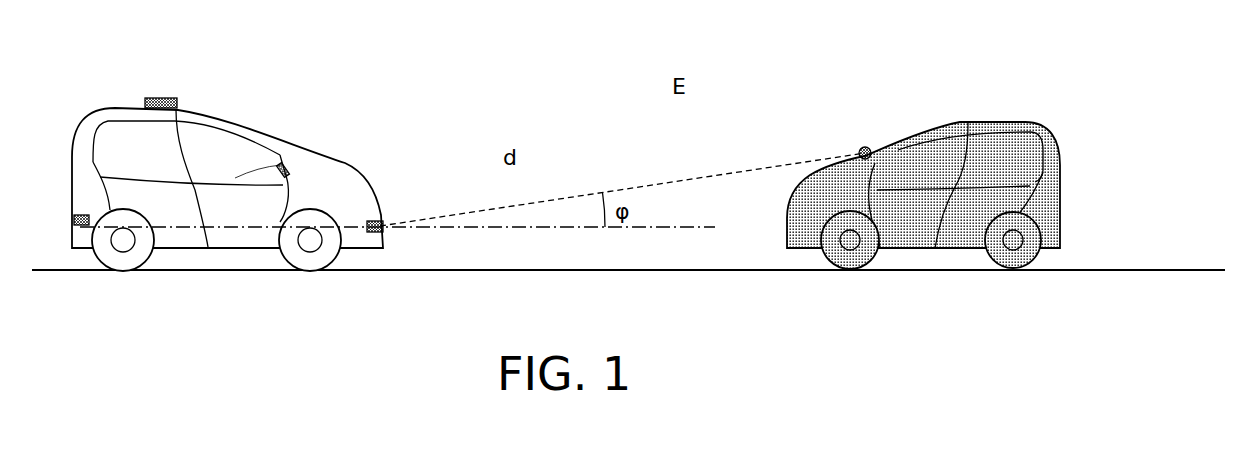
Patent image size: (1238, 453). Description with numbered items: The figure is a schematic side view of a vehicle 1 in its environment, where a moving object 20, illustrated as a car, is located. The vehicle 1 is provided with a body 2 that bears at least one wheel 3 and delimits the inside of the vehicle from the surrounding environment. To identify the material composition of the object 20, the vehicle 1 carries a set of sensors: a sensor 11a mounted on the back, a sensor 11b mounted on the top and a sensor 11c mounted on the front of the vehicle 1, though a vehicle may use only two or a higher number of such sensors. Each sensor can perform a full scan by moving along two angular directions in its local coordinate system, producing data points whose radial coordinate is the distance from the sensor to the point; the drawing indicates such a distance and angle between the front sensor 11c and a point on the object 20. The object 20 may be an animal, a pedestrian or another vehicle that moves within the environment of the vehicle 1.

The vehicle 1 is at (222, 182).
The body 2 is at (280, 140).
The wheel 3 is at (322, 256).
The sensor 11a is at (79, 227).
The sensor 11b is at (163, 96).
The sensor 11c is at (376, 218).
The object 20 is at (855, 92).